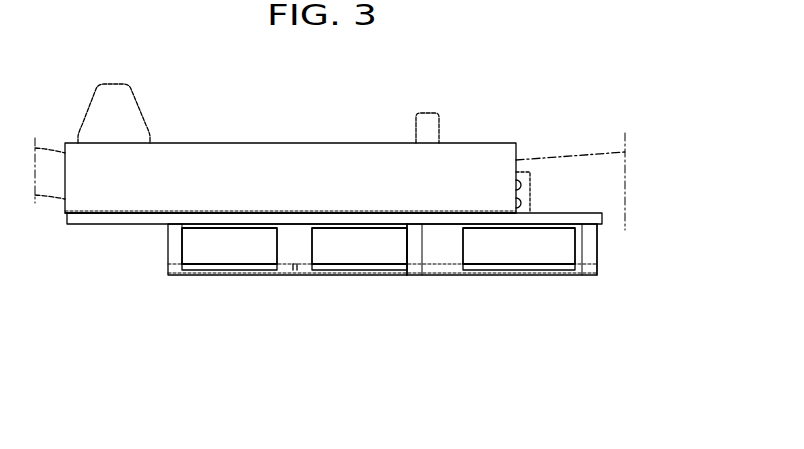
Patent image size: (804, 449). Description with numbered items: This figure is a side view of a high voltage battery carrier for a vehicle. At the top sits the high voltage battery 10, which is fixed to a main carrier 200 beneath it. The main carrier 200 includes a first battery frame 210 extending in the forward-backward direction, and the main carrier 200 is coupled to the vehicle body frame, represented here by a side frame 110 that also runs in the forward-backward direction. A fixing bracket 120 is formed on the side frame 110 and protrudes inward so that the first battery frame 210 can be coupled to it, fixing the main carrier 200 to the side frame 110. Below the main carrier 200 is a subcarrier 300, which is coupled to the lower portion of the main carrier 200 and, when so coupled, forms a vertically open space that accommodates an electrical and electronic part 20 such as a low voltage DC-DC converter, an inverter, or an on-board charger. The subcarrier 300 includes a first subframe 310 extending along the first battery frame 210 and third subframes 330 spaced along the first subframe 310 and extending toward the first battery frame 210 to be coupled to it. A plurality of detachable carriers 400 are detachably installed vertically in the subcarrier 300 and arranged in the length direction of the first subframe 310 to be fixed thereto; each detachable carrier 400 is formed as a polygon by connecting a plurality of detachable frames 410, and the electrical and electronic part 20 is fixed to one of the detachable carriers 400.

The high voltage battery 10 is at (207, 156).
The electrical and electronic part 20 is at (368, 250).
The side frame 110 is at (585, 167).
The fixing bracket 120 is at (519, 172).
The main carrier 200 is at (603, 228).
The first battery frame 210 is at (305, 210).
The subcarrier 300 is at (521, 276).
The first subframe 310 is at (463, 266).
The third subframe 330 is at (590, 258).
The detachable carrier 400 is at (212, 276).
The detachable frame 410 is at (265, 270).